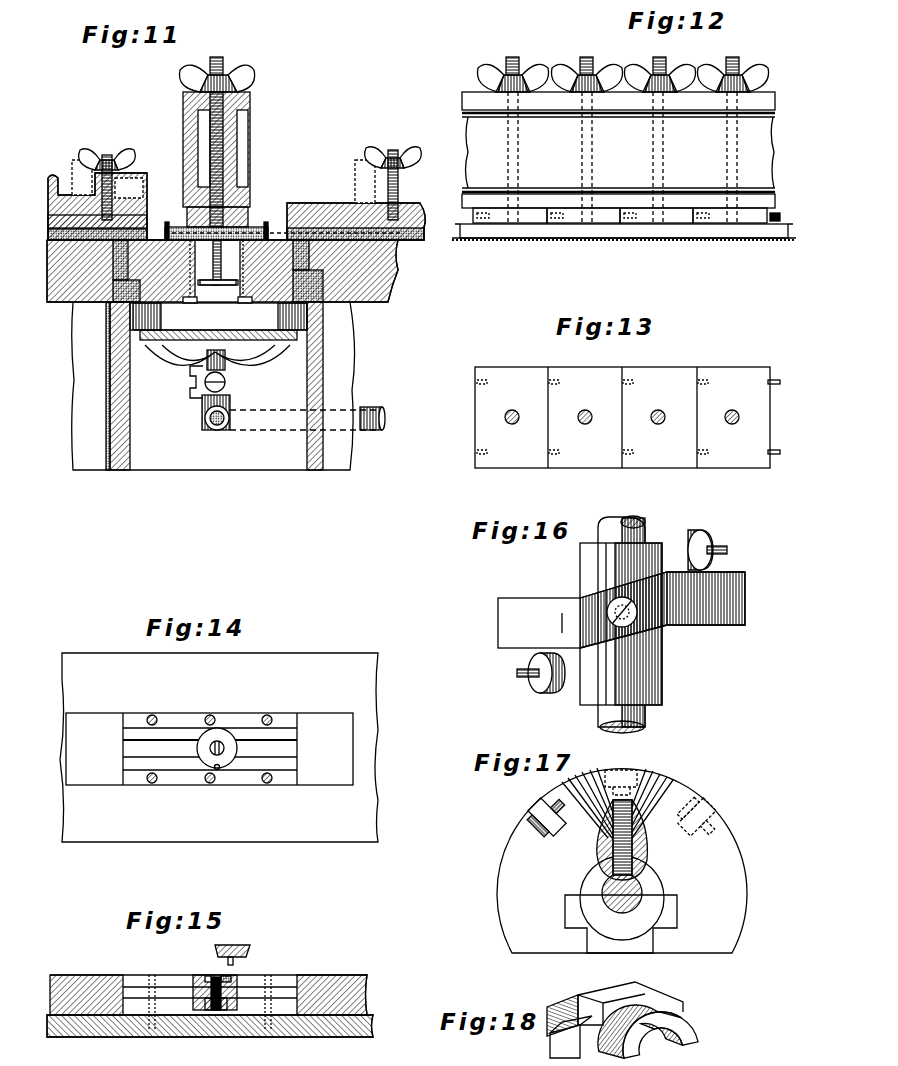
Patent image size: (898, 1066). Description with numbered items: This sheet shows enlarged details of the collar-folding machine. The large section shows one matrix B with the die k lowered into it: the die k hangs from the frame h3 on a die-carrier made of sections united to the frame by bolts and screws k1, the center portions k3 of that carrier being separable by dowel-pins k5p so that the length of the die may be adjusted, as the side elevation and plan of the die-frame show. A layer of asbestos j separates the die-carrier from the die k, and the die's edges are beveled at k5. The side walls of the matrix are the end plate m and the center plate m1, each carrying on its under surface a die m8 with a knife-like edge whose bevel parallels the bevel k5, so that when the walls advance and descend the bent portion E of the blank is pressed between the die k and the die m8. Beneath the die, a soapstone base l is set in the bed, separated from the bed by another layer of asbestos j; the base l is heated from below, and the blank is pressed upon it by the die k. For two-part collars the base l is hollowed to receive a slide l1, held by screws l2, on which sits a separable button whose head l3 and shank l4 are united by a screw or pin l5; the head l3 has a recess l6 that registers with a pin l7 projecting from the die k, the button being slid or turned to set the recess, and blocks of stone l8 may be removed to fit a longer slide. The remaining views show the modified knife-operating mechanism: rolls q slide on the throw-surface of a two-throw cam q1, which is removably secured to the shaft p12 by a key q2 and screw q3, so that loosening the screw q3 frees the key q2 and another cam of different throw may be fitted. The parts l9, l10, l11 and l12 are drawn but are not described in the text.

In FIG. 11, the bolts and screws k1 is at (221, 60).
In FIG. 12, the bolts and screws k1 is at (582, 58).
In FIG. 13, the bolts and screws k1 is at (584, 425).
In FIG. 11, the frame h3 is at (183, 106).
In FIG. 12, the frame h3 is at (618, 157).
In FIG. 11, the beveled edge of the die k5 is at (183, 215).
In FIG. 13, the beveled edge of the die k5 is at (634, 381).
In FIG. 12, the dowel-pins k5p is at (779, 212).
In FIG. 13, the dowel-pins k5p is at (779, 384).
In FIG. 11, the die k is at (260, 200).
In FIG. 12, the die k is at (601, 228).
In FIG. 15, the die k is at (252, 954).
In FIG. 12, the center portions of the die-plate k3 is at (530, 218).
In FIG. 13, the center portions of the die-plate k3 is at (622, 417).
In FIG. 11, the matrix B is at (234, 227).
In FIG. 11, the bent side portion of the blank E is at (242, 235).
In FIG. 11, the layer of asbestos j is at (72, 285).
In FIG. 12, the layer of asbestos j is at (494, 228).
In FIG. 11, the end plate forming outer wall of matrix m is at (53, 176).
In FIG. 11, the center plate forming inner wall of matrices m1 is at (416, 195).
In FIG. 11, the die with knife-like edge m8 is at (58, 232).
In FIG. 11, the heat-conducting slab or base l is at (111, 305).
In FIG. 14, the heat-conducting slab or base l is at (366, 750).
In FIG. 15, the heat-conducting slab or base l is at (366, 981).
In FIG. 14, the slide or plate l1 is at (186, 718).
In FIG. 15, the slide or plate l1 is at (162, 990).
In FIG. 14, the bolts or screws l2 is at (214, 717).
In FIG. 15, the bolts or screws l2 is at (150, 978).
In FIG. 11, the head of the button l3 is at (327, 306).
In FIG. 14, the head of the button l3 is at (230, 762).
In FIG. 15, the head of the button l3 is at (208, 976).
In FIG. 11, the shank of the button l4 is at (205, 286).
In FIG. 15, the shank of the button l4 is at (232, 1012).
In FIG. 11, the screw or pin l5 is at (132, 338).
In FIG. 14, the screw or pin l5 is at (210, 751).
In FIG. 15, the screw or pin l5 is at (217, 1011).
In FIG. 11, the recess l6 is at (226, 369).
In FIG. 14, the recess l6 is at (217, 772).
In FIG. 15, the recess l6 is at (245, 978).
In FIG. 11, the pin l7 is at (228, 288).
In FIG. 15, the pin l7 is at (248, 946).
In FIG. 14, the blocks of stone l8 is at (85, 718).
In FIG. 15, the blocks of stone l8 is at (82, 978).
In FIG. 11, the pipe l9 is at (214, 428).
In FIG. 11, the clip l10 is at (188, 384).
In FIG. 11, the wall l11 is at (121, 470).
In FIG. 11, the chamber l12 is at (276, 455).
In FIG. 16, the rolls q is at (713, 544).
In FIG. 17, the rolls q is at (535, 823).
In FIG. 16, the two-throw cam q1 is at (508, 626).
In FIG. 17, the two-throw cam q1 is at (573, 913).
In FIG. 18, the key q2 is at (684, 1017).
In FIG. 16, the screw q3 is at (609, 603).
In FIG. 17, the screw q3 is at (600, 856).
In FIG. 16, the shaft p12 is at (650, 716).
In FIG. 17, the shaft p12 is at (634, 893).